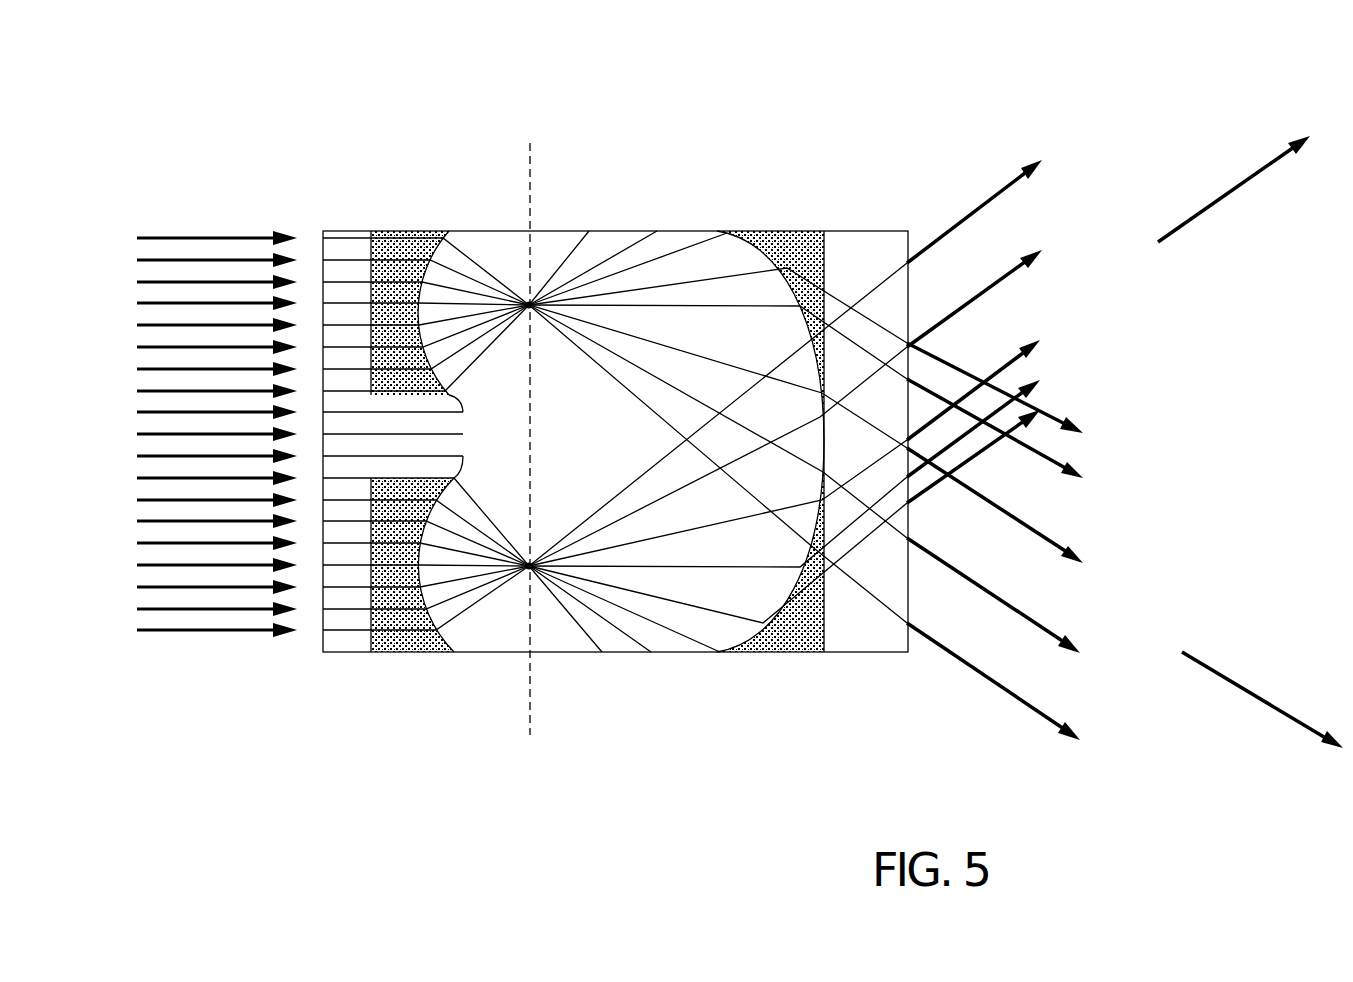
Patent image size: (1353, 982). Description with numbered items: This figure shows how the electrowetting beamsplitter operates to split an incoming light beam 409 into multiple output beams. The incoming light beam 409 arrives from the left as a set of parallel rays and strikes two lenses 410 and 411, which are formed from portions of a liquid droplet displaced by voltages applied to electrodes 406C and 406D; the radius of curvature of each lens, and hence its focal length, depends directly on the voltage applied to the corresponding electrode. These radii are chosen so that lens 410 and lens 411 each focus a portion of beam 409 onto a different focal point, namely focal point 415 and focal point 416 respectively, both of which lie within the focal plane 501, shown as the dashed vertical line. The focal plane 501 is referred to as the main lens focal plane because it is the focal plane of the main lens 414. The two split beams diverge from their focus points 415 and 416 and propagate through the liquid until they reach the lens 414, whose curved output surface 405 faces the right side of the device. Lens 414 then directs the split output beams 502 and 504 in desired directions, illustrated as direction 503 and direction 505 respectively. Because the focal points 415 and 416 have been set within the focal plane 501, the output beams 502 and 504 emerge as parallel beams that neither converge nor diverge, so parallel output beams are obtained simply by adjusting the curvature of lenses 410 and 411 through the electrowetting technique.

The incoming light beam 409 is at (206, 236).
The focal plane 501 is at (529, 382).
The electrode 406C is at (392, 268).
The electrode 406D is at (390, 612).
The lens 410 is at (508, 248).
The lens 411 is at (492, 650).
The lens 414 is at (755, 340).
The convex output lens surface 405 is at (808, 265).
The focal point 415 is at (517, 343).
The focal point 416 is at (517, 528).
The split output beam 502 is at (995, 192).
The split output beam 504 is at (992, 603).
The direction 503 is at (1226, 180).
The direction 505 is at (1237, 687).